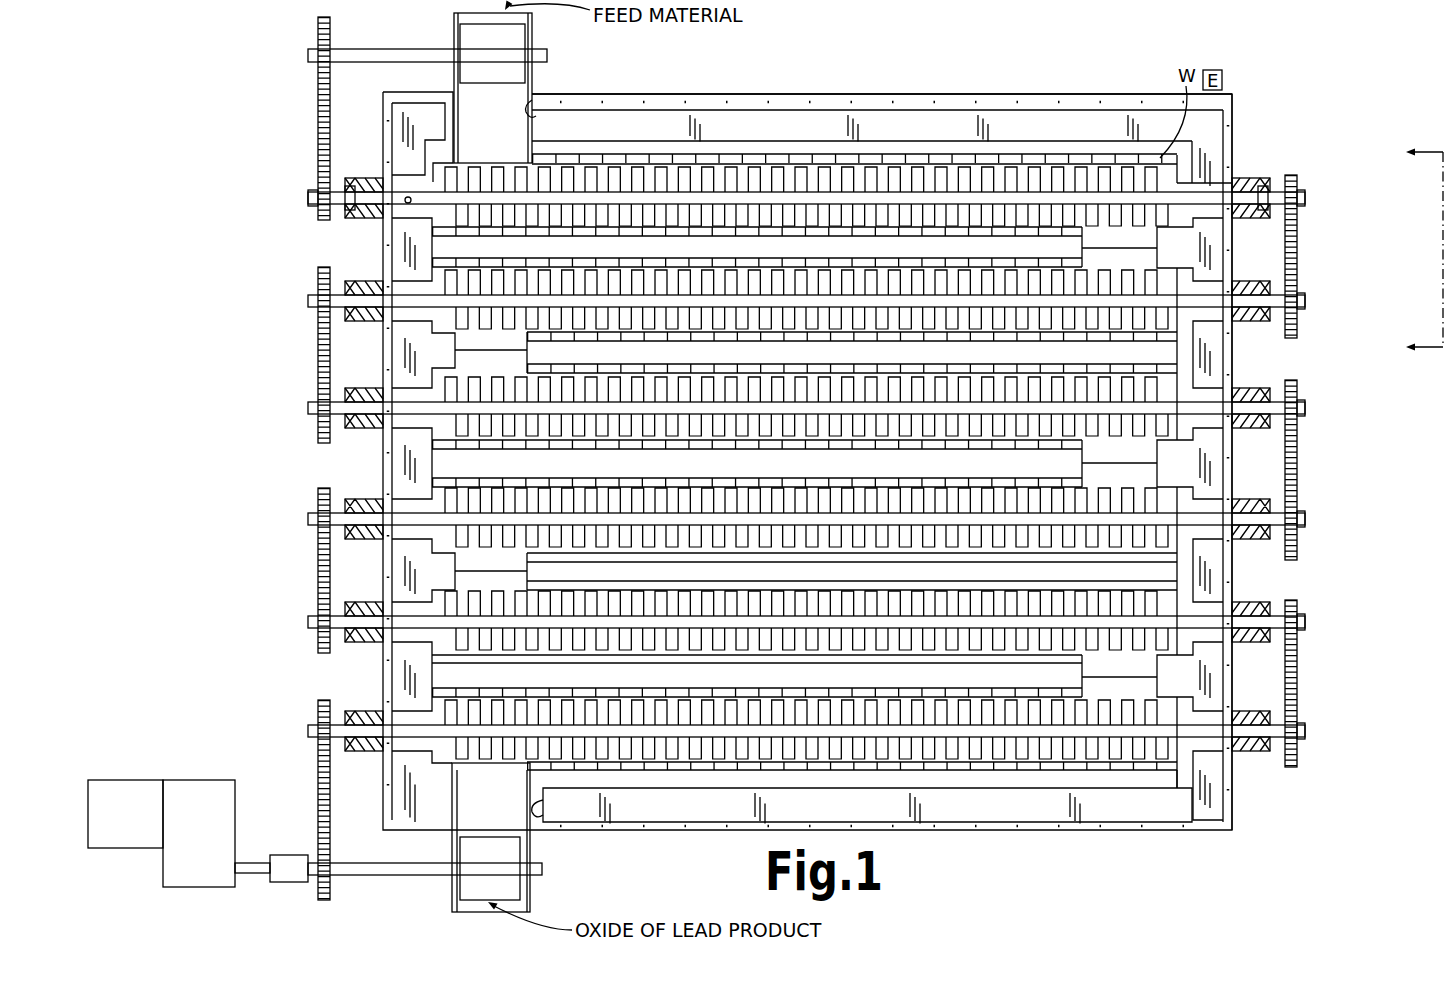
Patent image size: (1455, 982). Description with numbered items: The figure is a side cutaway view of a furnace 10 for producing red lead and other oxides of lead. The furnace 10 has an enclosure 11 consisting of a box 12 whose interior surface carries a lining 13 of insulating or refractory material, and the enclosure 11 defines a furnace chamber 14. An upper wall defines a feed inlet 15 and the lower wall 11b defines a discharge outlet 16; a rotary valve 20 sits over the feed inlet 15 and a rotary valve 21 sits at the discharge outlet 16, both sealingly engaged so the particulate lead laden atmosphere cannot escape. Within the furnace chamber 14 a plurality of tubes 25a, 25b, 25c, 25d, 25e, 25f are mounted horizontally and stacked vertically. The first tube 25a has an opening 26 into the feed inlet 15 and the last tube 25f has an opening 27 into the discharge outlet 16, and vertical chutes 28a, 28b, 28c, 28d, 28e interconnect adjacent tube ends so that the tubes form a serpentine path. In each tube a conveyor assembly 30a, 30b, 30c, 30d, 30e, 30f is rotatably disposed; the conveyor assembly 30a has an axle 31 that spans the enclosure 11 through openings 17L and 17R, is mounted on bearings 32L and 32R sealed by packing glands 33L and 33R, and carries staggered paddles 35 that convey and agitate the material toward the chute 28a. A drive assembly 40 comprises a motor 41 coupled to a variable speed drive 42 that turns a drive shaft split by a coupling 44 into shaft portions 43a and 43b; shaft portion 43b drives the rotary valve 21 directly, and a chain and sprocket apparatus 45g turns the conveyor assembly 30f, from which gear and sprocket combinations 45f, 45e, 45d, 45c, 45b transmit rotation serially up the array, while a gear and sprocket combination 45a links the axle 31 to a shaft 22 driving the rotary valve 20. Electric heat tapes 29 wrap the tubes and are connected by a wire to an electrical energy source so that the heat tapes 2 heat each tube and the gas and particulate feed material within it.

The furnace 10 is at (1360, 484).
The enclosure 11 is at (740, 93).
The lower wall 11b is at (640, 826).
The box 12 is at (1242, 150).
The lining 13 is at (1212, 128).
The furnace chamber 14 is at (1178, 257).
The feed inlet 15 is at (537, 103).
The discharge outlet 16 is at (537, 818).
The opening 17L is at (405, 213).
The opening 17R is at (1201, 207).
The rotary valve 20 is at (542, 40).
The rotary valve 21 is at (556, 893).
The shaft 22 is at (428, 50).
The first tube 25a is at (505, 238).
The tube 25b is at (672, 342).
The tube 25c is at (560, 452).
The tube 25d is at (658, 478).
The tube 25e is at (660, 666).
The last tube 25f is at (733, 695).
The opening 26 is at (565, 166).
The opening 27 is at (455, 768).
The vertical chute 28a is at (1155, 258).
The vertical chute 28b is at (530, 352).
The vertical chute 28c is at (1082, 466).
The vertical chute 28d is at (530, 570).
The vertical chute 28e is at (1080, 680).
The electric heat tapes 29 is at (828, 153).
The conveyor assembly 30a is at (1320, 196).
The conveyor assembly 30b is at (1320, 298).
The conveyor assembly 30c is at (1320, 405).
The conveyor assembly 30d is at (1320, 524).
The conveyor assembly 30e is at (1320, 622).
The conveyor assembly 30f is at (1320, 731).
The axle 31 is at (308, 193).
The bearing 32L is at (347, 220).
The bearing 32R is at (1263, 218).
The packing gland 33L is at (368, 178).
The packing gland 33R is at (1257, 178).
The paddles 35 is at (884, 166).
The drive assembly 40 is at (315, 832).
The motor 41 is at (135, 776).
The variable speed drive 42 is at (188, 902).
The shaft portion 43a is at (262, 862).
The shaft portion 43b is at (443, 876).
The coupling 44 is at (288, 890).
The gear and sprocket combination 45a is at (313, 92).
The gear and sprocket combination 45b is at (1303, 326).
The gear and sprocket combination 45c is at (313, 376).
The gear and sprocket combination 45d is at (1303, 506).
The gear and sprocket combination 45e is at (313, 566).
The gear and sprocket combination 45f is at (1303, 702).
The chain and sprocket apparatus 45g is at (313, 795).
The heat tapes 2 is at (1424, 248).